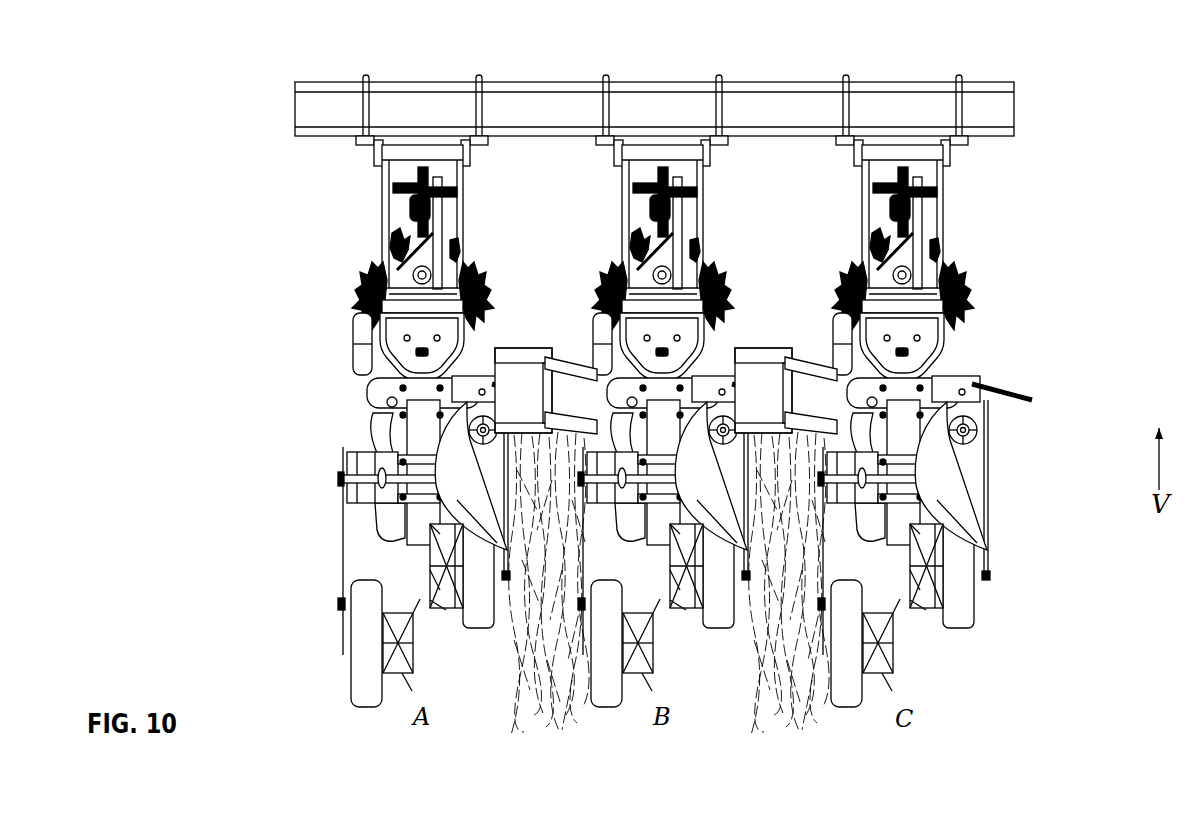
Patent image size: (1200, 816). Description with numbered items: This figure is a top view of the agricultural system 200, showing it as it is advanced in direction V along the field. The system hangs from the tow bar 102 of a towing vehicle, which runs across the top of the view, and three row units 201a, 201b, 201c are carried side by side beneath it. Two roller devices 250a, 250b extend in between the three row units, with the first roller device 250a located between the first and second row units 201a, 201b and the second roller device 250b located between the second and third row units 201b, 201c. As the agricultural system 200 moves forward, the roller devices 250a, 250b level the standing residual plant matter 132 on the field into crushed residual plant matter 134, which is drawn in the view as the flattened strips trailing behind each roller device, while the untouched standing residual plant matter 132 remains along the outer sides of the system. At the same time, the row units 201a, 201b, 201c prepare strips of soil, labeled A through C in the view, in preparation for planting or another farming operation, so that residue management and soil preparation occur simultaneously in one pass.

The agricultural system 200 is at (740, 371).
The tow bar 102 is at (1016, 112).
The row unit 201a is at (478, 250).
The row unit 201b is at (718, 250).
The row unit 201c is at (958, 250).
The roller device 250a is at (529, 350).
The roller device 250b is at (769, 350).
The standing residual plant matter 132 is at (288, 645).
The crushed residual plant matter 134 is at (561, 689).